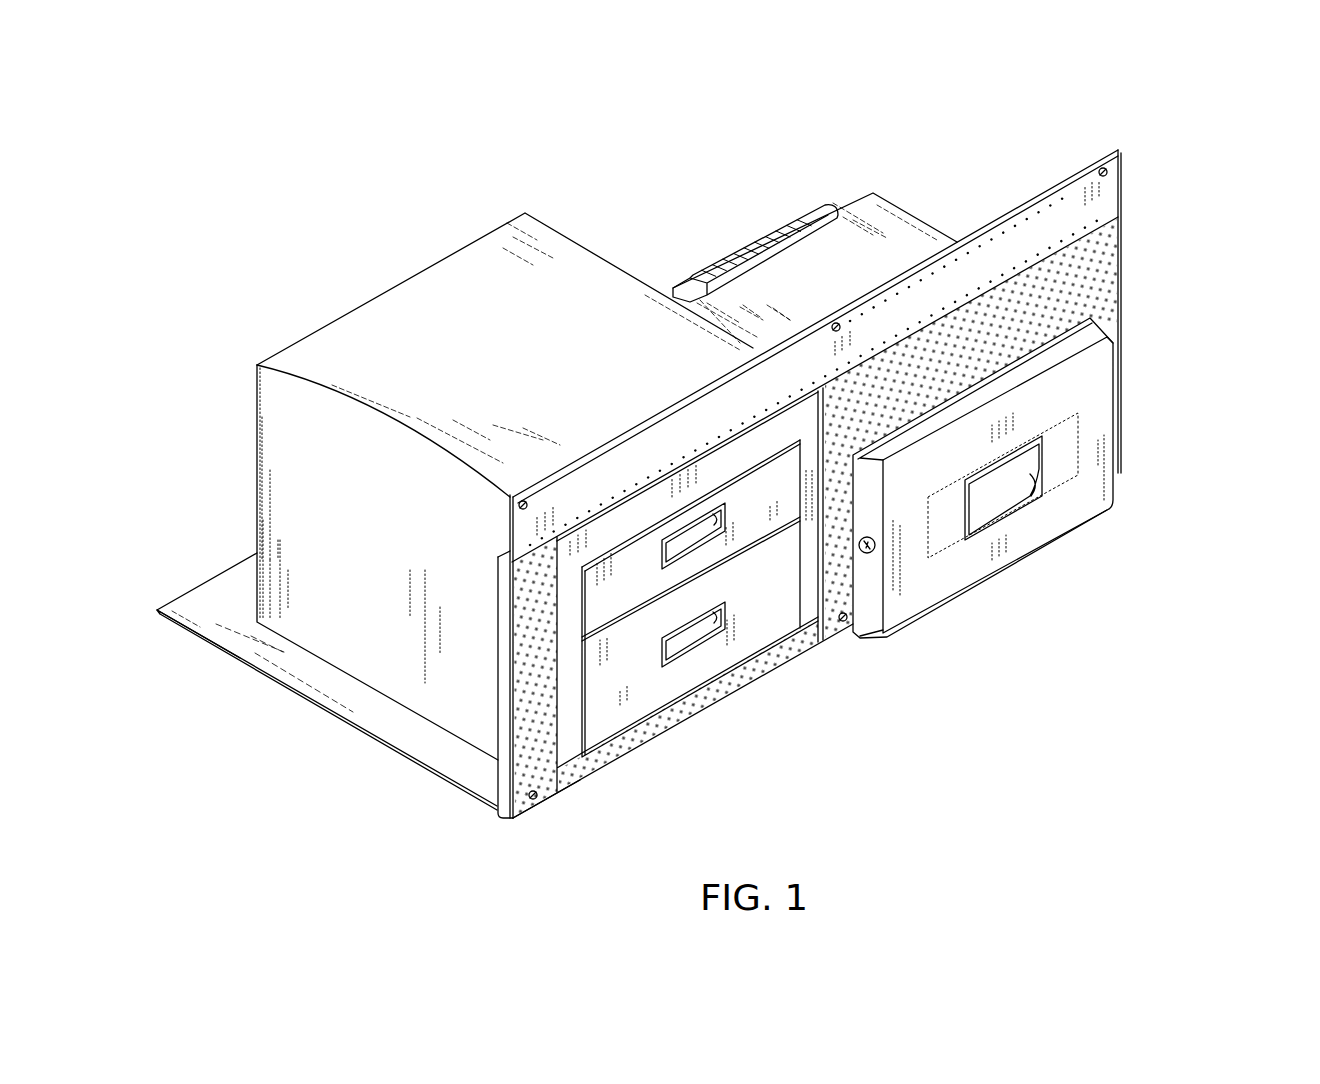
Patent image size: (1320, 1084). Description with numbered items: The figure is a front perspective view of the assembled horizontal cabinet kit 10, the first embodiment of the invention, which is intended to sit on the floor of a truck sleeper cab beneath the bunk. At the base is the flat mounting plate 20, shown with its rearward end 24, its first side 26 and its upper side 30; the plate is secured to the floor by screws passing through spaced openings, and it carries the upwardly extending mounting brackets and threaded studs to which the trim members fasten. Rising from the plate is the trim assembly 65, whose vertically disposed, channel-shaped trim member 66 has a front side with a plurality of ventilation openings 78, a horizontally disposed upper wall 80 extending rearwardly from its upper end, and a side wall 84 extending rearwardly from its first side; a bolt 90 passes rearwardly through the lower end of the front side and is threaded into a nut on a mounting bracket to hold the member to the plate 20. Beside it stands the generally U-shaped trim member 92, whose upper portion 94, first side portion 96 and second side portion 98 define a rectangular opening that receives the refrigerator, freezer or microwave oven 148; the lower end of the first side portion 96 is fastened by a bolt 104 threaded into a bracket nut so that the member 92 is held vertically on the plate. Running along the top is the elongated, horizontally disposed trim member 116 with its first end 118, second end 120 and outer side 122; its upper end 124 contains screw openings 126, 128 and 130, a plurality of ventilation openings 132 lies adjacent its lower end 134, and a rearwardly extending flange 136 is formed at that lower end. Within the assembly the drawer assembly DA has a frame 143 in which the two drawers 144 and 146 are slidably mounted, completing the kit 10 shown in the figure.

The horizontal cabinet kit 10 is at (657, 258).
The mounting plate 20 is at (292, 690).
The rearward end 24 is at (200, 583).
The first side 26 is at (247, 665).
The upper side 30 is at (212, 609).
The trim assembly 65 is at (525, 827).
The trim member 66 is at (520, 752).
The ventilation openings 78 is at (548, 703).
The upper wall 80 is at (500, 562).
The side wall 84 is at (503, 643).
The bolt 90 is at (538, 797).
The U-shaped trim member 92 is at (1127, 292).
The upper portion 94 is at (1093, 270).
The first side portion 96 is at (840, 513).
The second side portion 98 is at (1120, 341).
The bolt 104 is at (843, 621).
The trim member 116 is at (613, 428).
The first end 118 is at (507, 512).
The second end 120 is at (1120, 177).
The outer side 122 is at (762, 388).
The upper end 124 is at (1067, 173).
The screw opening 126 is at (513, 495).
The screw opening 128 is at (840, 323).
The screw opening 130 is at (1107, 168).
The ventilation openings 132 is at (1080, 227).
The lower end 134 is at (987, 290).
The flange 136 is at (505, 552).
The frame 143 is at (380, 670).
The drawer 144 is at (749, 510).
The drawer 146 is at (749, 618).
The refrigerator, freezer or microwave oven 148 is at (1103, 412).
The drawer assembly DA is at (747, 670).